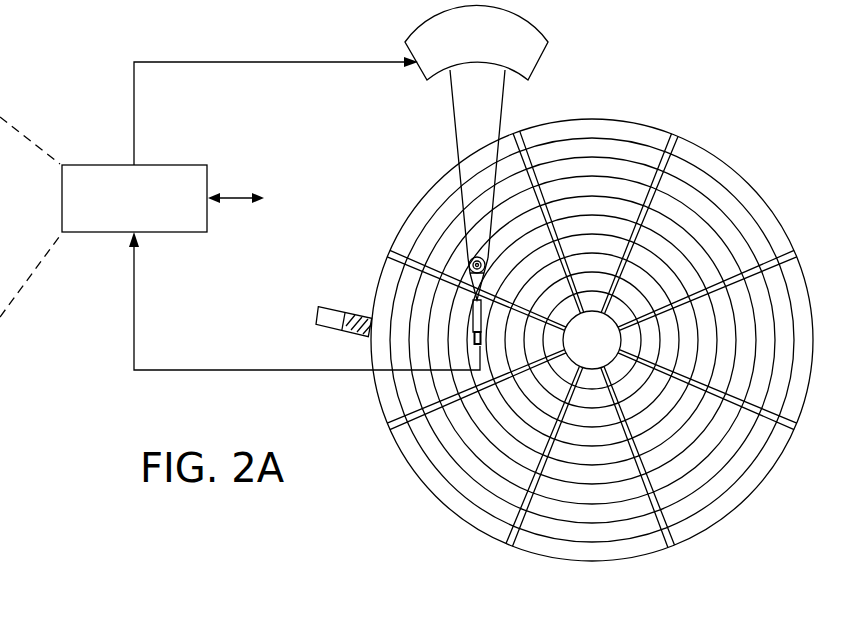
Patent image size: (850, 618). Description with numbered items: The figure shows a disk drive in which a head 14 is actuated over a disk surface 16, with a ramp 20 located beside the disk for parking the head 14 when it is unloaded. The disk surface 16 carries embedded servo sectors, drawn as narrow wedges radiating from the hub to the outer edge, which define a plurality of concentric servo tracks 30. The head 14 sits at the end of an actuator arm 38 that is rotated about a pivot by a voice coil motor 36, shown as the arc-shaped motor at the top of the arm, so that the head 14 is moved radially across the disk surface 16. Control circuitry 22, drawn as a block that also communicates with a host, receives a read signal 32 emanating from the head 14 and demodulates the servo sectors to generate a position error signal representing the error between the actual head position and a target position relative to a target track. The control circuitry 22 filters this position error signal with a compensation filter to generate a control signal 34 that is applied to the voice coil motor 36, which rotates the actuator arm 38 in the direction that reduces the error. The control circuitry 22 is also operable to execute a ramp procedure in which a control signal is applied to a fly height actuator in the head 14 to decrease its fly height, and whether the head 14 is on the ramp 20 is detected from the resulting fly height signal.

The head 14 is at (464, 328).
The disk surface 16 is at (749, 166).
The ramp 20 is at (335, 329).
The control circuitry 22 is at (172, 164).
The servo tracks 30 is at (597, 152).
The read signal 32 is at (208, 368).
The control signal 34 is at (231, 61).
The voice coil motor 36 is at (420, 76).
The actuator arm 38 is at (460, 152).